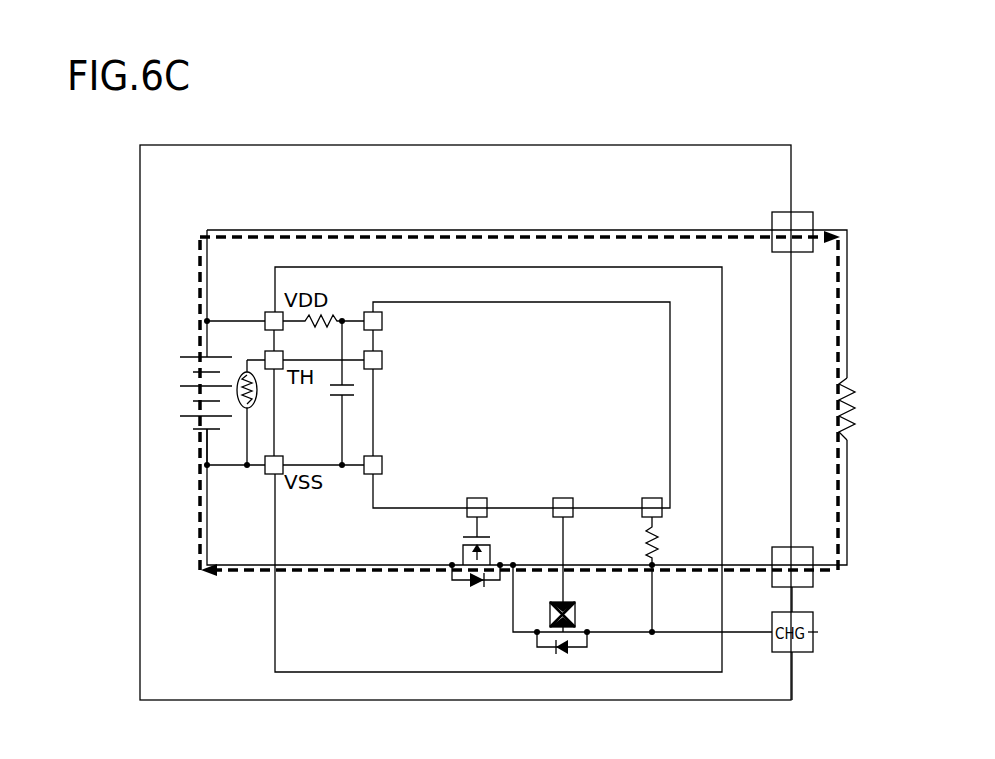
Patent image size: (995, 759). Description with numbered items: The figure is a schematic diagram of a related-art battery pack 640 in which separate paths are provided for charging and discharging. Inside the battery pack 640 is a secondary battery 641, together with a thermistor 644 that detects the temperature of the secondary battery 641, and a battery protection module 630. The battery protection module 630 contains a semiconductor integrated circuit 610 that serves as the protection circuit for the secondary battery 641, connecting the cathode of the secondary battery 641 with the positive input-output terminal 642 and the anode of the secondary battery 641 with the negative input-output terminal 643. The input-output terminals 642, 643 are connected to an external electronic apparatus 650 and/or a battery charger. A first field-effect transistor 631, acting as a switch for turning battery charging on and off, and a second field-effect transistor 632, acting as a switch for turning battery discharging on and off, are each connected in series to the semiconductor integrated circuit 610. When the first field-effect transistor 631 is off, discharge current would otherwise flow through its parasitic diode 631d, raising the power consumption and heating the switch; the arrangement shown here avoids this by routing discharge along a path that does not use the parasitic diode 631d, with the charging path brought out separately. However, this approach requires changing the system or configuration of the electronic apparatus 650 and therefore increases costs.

The battery pack 640 is at (745, 145).
The secondary battery 641 is at (192, 355).
The positive input-output terminal 642 is at (800, 212).
The negative input-output terminal 643 is at (795, 587).
The thermistor 644 is at (257, 400).
The battery protection module 630 is at (723, 312).
The semiconductor integrated circuit 610 is at (671, 390).
The second field-effect transistor 632 is at (489, 541).
The first field-effect transistor 631 is at (577, 606).
The parasitic diode 631d is at (570, 650).
The electronic apparatus 650 is at (850, 402).